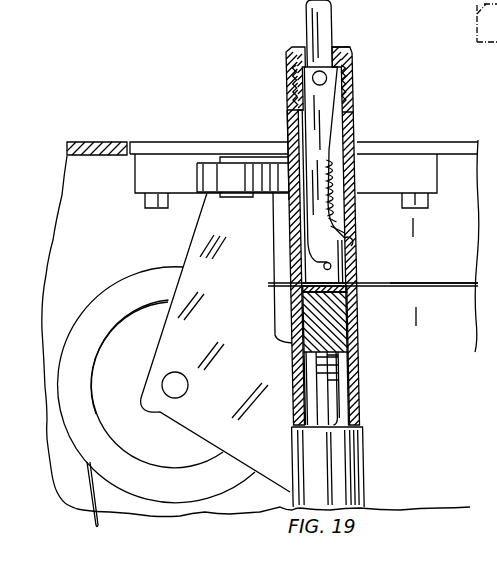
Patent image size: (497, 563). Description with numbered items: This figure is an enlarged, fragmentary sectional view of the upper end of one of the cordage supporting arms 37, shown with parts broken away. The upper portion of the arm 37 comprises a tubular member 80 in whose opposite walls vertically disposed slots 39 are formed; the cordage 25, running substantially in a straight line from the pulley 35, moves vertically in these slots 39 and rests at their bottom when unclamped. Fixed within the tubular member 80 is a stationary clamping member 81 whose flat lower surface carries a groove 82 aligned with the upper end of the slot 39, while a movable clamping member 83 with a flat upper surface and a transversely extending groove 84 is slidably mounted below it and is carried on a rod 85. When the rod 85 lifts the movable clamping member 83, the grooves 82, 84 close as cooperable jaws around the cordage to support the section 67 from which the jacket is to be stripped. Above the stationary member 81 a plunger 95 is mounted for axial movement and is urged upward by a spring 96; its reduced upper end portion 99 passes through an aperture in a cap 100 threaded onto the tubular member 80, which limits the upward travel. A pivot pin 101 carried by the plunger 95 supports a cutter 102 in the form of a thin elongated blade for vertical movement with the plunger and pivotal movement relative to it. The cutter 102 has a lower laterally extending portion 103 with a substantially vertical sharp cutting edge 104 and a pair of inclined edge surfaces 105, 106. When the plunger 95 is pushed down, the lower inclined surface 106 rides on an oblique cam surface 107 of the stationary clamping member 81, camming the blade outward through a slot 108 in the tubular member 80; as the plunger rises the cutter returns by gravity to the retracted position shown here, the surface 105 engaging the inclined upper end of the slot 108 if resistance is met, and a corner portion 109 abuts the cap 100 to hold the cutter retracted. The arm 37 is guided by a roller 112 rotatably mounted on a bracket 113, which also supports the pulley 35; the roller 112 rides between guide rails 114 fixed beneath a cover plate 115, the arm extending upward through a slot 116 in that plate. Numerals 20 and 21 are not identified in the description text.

The caster assembly 20 is at (331, 376).
The section line 21 is at (416, 227).
The cordage 25 is at (386, 283).
The pulley 35 is at (131, 277).
The arm 37 is at (287, 126).
The slot 39 is at (351, 296).
The section of cordage 67 is at (430, 281).
The tubular member 80 is at (345, 121).
The stationary clamping member 81 is at (340, 227).
The groove 82 is at (277, 284).
The movable clamping member 83 is at (297, 313).
The groove 84 is at (325, 322).
The rod 85 is at (330, 421).
The plunger 95 is at (343, 133).
The spring 96 is at (333, 183).
The reduced upper end portion 99 is at (331, 18).
The cap 100 is at (351, 68).
The pivot pin 101 is at (311, 70).
The cutter 102 is at (297, 97).
The lower laterally extending portion 103 is at (303, 245).
The cutting edge 104 is at (338, 257).
The inclined edge surface 105 is at (336, 220).
The inclined edge surface 106 is at (301, 262).
The oblique cam surface 107 is at (325, 294).
The slot 108 is at (346, 247).
The corner portion 109 is at (338, 66).
The roller 112 is at (197, 179).
The bracket 113 is at (193, 243).
The guide rail 114 is at (188, 196).
The cover plate 115 is at (97, 142).
The slot 116 is at (166, 142).